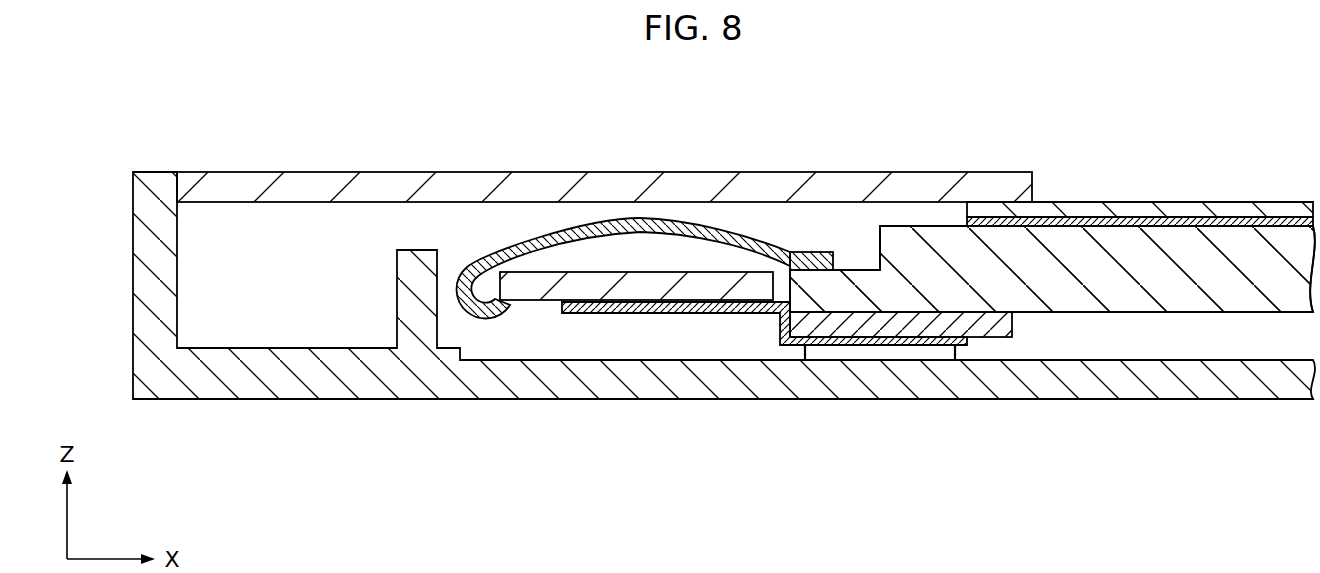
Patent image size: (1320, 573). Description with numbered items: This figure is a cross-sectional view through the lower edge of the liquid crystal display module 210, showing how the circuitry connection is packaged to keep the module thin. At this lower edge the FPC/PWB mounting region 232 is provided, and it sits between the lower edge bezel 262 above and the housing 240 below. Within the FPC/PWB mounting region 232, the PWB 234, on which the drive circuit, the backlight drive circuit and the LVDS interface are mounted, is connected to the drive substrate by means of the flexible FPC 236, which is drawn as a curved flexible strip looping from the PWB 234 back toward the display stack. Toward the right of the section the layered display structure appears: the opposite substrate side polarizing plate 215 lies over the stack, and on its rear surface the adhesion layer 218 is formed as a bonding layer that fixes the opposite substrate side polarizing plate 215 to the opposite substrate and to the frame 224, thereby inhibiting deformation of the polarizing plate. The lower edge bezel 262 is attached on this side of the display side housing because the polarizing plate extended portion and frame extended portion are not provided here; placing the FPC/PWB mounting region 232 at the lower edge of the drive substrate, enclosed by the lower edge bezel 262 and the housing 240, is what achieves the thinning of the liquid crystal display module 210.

The liquid crystal display module 210 is at (1267, 247).
The opposite substrate side polarizing plate 215 is at (1197, 224).
The adhesion layer 218 is at (1117, 213).
The frame 224 is at (873, 327).
The FPC/PWB mounting region 232 is at (853, 270).
The PWB 234 is at (603, 287).
The FPC 236 is at (647, 220).
The housing 240 is at (737, 380).
The lower edge bezel 262 is at (572, 187).